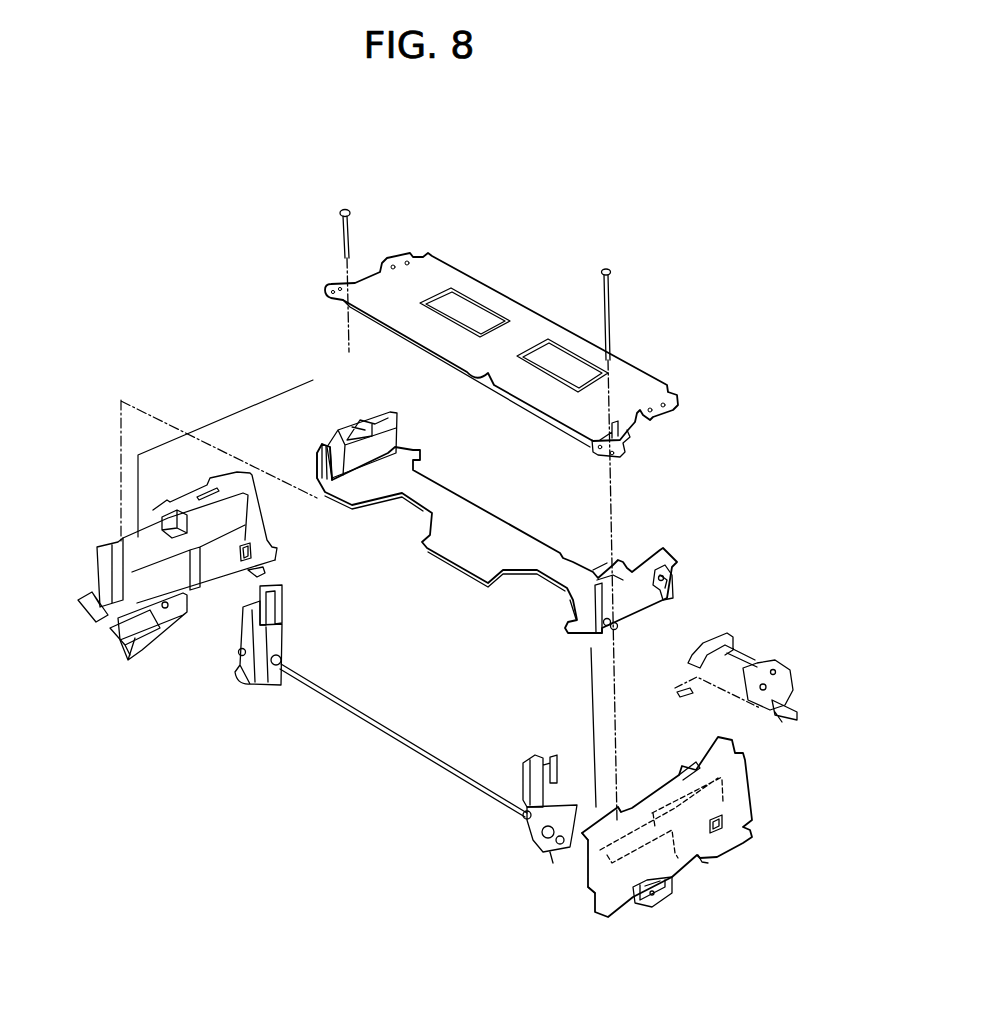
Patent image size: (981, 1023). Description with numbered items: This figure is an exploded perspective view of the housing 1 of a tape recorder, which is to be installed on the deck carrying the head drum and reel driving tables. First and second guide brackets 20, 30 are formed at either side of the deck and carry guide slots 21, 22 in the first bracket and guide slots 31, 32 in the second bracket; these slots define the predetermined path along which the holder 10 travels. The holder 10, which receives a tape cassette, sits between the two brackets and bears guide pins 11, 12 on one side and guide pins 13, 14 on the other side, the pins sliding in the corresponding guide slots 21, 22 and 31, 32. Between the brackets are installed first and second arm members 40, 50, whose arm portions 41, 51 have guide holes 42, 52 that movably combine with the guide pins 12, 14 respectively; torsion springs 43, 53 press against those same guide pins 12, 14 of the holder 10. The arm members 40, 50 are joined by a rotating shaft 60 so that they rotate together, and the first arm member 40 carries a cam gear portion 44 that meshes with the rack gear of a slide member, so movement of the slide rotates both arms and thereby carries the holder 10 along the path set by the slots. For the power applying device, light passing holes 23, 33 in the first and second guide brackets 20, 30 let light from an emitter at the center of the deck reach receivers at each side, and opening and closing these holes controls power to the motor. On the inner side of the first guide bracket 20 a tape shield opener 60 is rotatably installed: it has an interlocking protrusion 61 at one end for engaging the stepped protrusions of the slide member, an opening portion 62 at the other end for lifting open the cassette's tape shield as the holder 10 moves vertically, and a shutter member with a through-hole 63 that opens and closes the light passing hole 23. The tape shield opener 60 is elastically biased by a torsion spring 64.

The housing 1 is at (245, 315).
The holder 10 is at (512, 499).
The guide pin 11 is at (667, 573).
The guide pin 12 is at (655, 629).
The guide pin 13 is at (360, 413).
The guide pin 14 is at (313, 460).
The first guide bracket 20 is at (716, 847).
The guide slot 21 is at (740, 835).
The guide slot 22 is at (678, 853).
The light passing hole 23 is at (721, 805).
The second guide bracket 30 is at (153, 513).
The guide slot 31 is at (218, 513).
The guide slot 32 is at (157, 577).
The light passing hole 33 is at (253, 547).
The first arm member 40 is at (509, 814).
The arm portion 41 is at (572, 760).
The guide hole 42 is at (538, 755).
The torsion spring 43 is at (527, 813).
The cam gear portion 44 is at (573, 916).
The second arm member 50 is at (255, 686).
The arm portion 51 is at (283, 615).
The guide hole 52 is at (267, 593).
The torsion spring 53 is at (238, 662).
The rotating shaft / tape shield opener 60 is at (370, 722).
The interlocking protrusion 61 is at (777, 717).
The opening portion 62 is at (688, 663).
The through-hole 63 is at (760, 683).
The torsion spring 64 is at (695, 705).